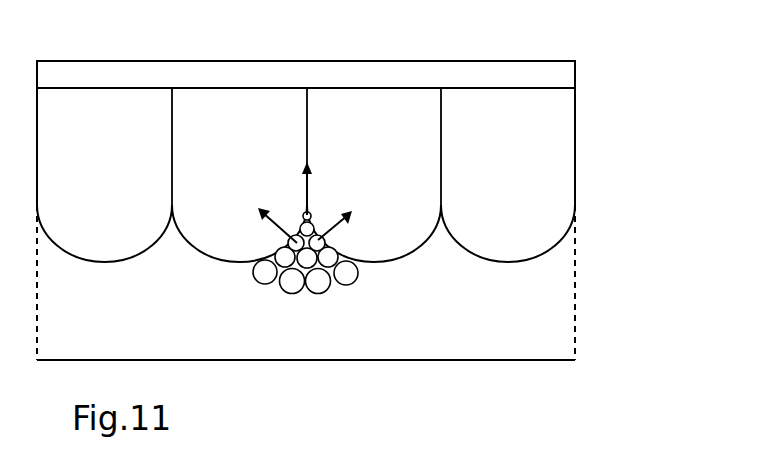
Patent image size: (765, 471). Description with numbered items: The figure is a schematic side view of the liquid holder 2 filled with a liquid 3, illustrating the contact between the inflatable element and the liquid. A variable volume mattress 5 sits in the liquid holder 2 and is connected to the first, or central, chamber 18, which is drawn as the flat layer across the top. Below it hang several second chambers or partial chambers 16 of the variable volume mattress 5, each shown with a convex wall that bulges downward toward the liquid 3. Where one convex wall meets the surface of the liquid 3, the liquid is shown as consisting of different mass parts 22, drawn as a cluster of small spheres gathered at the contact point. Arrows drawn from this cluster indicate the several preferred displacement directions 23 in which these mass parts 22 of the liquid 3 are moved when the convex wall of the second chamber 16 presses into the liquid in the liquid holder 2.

The liquid holder 2 is at (306, 211).
The central chamber 18 is at (327, 49).
The variable volume mattress 5 is at (341, 103).
The second chamber 16 is at (342, 175).
The mass parts 22 is at (290, 271).
The preferred displacement directions 23 is at (291, 185).
The liquid 3 is at (435, 316).